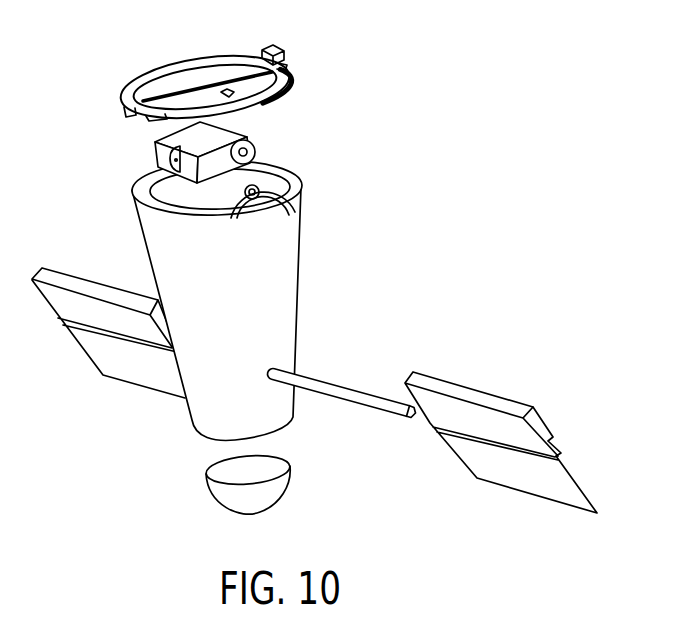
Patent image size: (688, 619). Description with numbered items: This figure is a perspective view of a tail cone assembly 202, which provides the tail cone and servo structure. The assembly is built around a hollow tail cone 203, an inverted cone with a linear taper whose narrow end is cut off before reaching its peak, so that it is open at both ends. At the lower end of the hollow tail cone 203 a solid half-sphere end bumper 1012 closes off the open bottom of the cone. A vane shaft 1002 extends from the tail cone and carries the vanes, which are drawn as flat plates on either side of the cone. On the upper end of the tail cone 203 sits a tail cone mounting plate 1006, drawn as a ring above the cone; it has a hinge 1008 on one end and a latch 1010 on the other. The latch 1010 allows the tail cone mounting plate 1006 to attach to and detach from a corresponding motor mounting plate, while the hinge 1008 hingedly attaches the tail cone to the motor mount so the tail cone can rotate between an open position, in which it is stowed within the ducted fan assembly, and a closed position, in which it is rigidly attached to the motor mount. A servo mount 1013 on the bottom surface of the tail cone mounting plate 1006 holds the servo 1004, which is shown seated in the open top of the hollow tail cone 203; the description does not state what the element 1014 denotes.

The tail cone assembly 202 is at (435, 257).
The hollow tail cone 203 is at (282, 242).
The vane shaft 1002 is at (372, 405).
The servo 1004 is at (220, 160).
The tail cone mounting plate 1006 is at (230, 82).
The hinge 1008 is at (128, 115).
The latch 1010 is at (287, 55).
The end bumper 1012 is at (228, 493).
The servo mount 1013 is at (287, 74).
The roller 1014 is at (263, 175).